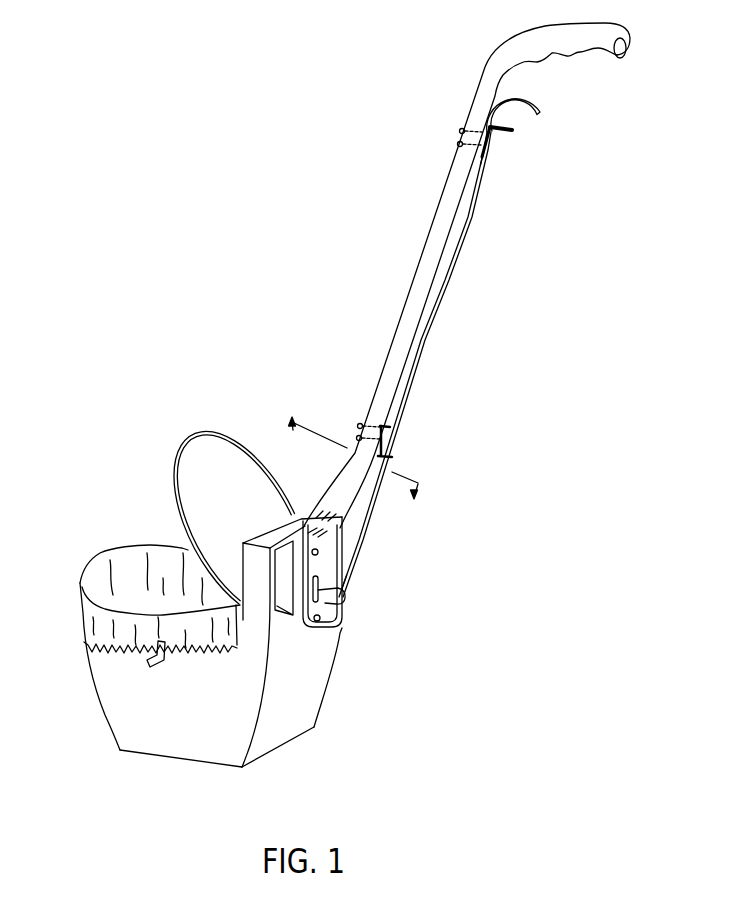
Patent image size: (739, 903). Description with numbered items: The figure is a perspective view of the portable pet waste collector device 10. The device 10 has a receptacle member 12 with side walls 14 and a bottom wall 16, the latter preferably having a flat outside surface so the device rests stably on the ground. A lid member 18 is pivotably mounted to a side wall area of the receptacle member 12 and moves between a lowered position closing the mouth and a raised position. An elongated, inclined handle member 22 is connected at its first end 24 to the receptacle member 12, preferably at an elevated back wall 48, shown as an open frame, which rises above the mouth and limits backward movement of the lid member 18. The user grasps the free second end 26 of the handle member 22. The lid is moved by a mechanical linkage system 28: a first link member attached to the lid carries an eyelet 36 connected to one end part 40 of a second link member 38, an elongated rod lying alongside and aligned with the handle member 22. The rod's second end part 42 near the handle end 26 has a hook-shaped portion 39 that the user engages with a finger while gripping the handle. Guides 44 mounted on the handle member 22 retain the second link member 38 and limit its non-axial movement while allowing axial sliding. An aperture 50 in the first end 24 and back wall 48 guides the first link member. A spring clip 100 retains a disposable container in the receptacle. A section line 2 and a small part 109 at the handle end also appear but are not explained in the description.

The pet waste collector device 10 is at (513, 491).
The receptacle member 12 is at (189, 658).
The side walls 14 is at (130, 618).
The bottom wall 16 is at (178, 757).
The lid member 18 is at (220, 447).
The handle member 22 is at (484, 269).
The first end of handle member 24 is at (363, 579).
The free second end of handle member 26 is at (575, 60).
The mechanical linkage system 28 is at (484, 348).
The eyelet 36 is at (348, 597).
The second link member 38 is at (452, 272).
The hook-shaped portion 39 is at (547, 103).
The one end part of second link member 40 is at (338, 587).
The second end part of second link member 42 is at (495, 165).
The guides 44 is at (512, 131).
The elevated back wall 48 is at (280, 531).
The aperture 50 is at (325, 617).
The spring clips 100 is at (158, 658).
The hanging ring 109 is at (627, 42).
The section line 2- 2 is at (348, 467).